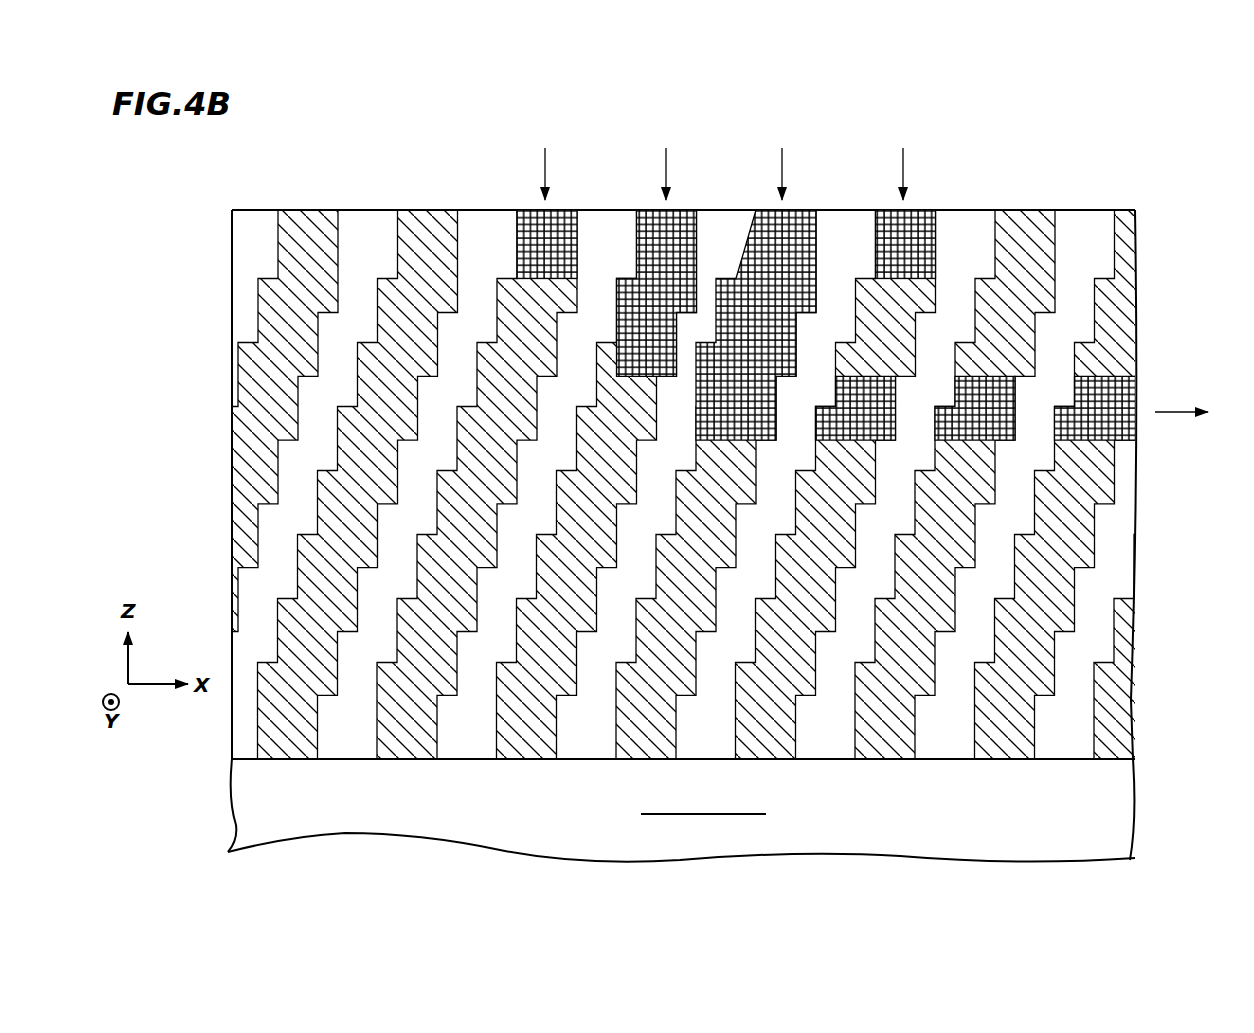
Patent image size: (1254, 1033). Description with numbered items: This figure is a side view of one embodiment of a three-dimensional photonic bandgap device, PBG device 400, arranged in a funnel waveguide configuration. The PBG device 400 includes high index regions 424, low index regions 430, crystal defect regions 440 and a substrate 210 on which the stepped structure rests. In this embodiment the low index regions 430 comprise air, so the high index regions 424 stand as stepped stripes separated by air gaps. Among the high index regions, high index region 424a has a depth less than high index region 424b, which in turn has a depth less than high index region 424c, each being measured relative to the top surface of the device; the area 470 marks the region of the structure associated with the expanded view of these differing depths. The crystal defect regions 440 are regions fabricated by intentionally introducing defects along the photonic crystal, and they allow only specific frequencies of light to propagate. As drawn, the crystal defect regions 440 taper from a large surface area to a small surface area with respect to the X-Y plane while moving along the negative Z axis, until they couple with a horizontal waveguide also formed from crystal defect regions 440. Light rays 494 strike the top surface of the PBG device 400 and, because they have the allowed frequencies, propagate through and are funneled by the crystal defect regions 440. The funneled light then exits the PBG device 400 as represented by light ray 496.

The 3D PBG device 400 is at (1135, 163).
The high index regions 424 is at (684, 484).
The high index region 424a is at (337, 309).
The high index region 424b is at (300, 371).
The high index region 424c is at (290, 432).
The low index regions 430 is at (696, 484).
The crystal defect regions 440 is at (828, 325).
The pitch 470 is at (340, 197).
The light rays 494 is at (933, 153).
The light ray 496 is at (1168, 412).
The substrate 210 is at (238, 790).